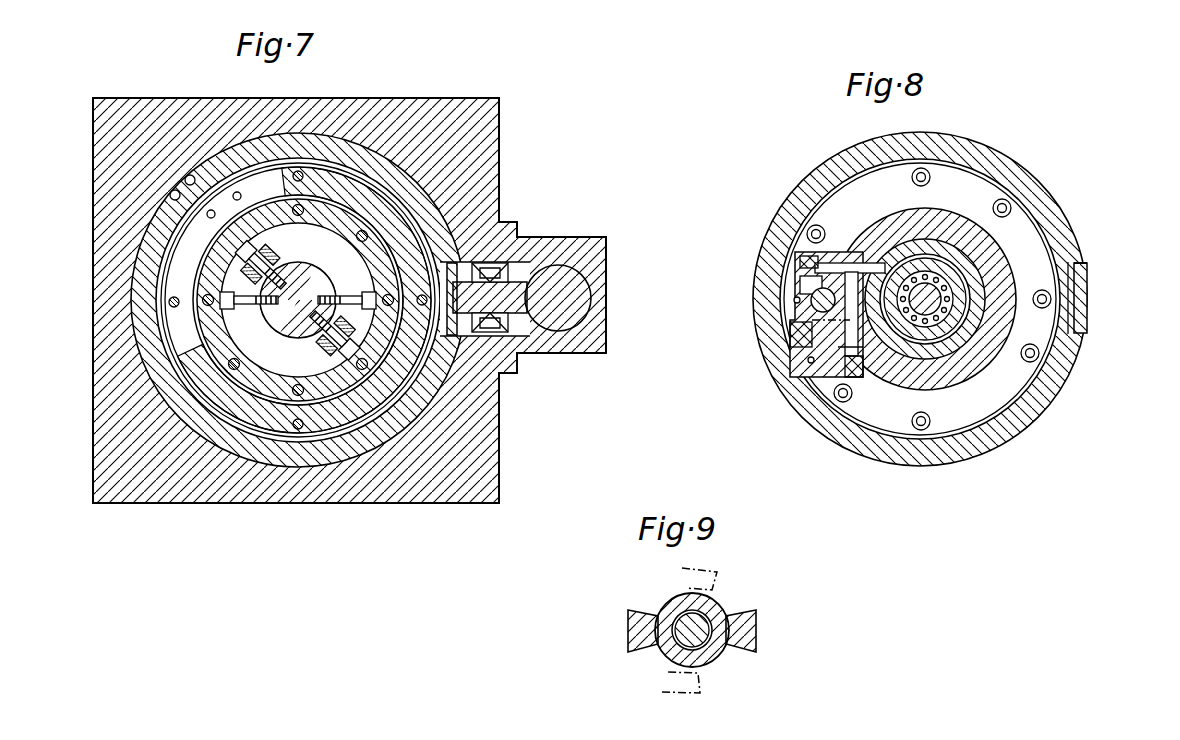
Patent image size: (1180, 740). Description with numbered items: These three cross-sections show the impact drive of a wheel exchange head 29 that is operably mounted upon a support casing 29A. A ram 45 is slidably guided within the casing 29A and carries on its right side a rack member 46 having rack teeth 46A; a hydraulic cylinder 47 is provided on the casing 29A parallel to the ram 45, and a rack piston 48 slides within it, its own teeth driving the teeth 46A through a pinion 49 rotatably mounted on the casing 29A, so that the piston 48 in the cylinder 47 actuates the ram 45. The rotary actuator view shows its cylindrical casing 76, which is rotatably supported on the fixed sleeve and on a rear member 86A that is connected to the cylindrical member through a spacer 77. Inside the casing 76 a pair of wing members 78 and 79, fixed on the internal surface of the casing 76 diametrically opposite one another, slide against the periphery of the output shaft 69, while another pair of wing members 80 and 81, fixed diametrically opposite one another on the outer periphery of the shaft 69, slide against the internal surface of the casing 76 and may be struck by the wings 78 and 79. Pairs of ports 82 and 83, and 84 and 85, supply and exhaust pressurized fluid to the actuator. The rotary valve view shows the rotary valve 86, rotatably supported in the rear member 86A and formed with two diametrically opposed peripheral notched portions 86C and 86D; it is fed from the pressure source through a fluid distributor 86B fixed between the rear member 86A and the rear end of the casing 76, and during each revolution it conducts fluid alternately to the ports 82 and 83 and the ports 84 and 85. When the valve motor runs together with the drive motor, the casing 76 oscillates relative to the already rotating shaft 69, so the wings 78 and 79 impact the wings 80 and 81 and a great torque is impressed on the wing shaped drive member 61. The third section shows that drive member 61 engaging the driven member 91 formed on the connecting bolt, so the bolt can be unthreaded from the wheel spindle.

In FIG. 7, the wheel exchange head 29 is at (429, 86).
In FIG. 7, the support casing 29A is at (462, 490).
In FIG. 7, the ram 45 is at (172, 442).
In FIG. 8, the ram 45 is at (1068, 366).
In FIG. 7, the rack member 46 is at (472, 336).
In FIG. 8, the rack member 46 is at (1087, 300).
In FIG. 8, the rack teeth 46A is at (1092, 272).
In FIG. 7, the hydraulic cylinder 47 is at (592, 354).
In FIG. 7, the rack piston 48 is at (588, 297).
In FIG. 7, the pinion 49 is at (512, 330).
In FIG. 9, the drive member 61 is at (720, 572).
In FIG. 7, the output shaft 69 is at (283, 340).
In FIG. 8, the output shaft 69 is at (950, 292).
In FIG. 7, the cylindrical casing 76 is at (252, 420).
In FIG. 7, the spacer 77 is at (312, 420).
In FIG. 7, the wing member 78 is at (230, 258).
In FIG. 7, the wing member 79 is at (338, 428).
In FIG. 7, the wing member 80 is at (190, 314).
In FIG. 7, the wing member 81 is at (420, 262).
In FIG. 7, the port 82 is at (210, 338).
In FIG. 7, the port 83 is at (350, 282).
In FIG. 7, the port 84 is at (218, 292).
In FIG. 7, the port 85 is at (388, 400).
In FIG. 8, the rotary valve 86 is at (797, 317).
In FIG. 8, the rear member 86A is at (982, 362).
In FIG. 8, the fluid distributor 86B is at (958, 400).
In FIG. 8, the notched portion 86C is at (805, 276).
In FIG. 8, the notched portion 86D is at (812, 352).
In FIG. 9, the driven member 91 is at (724, 654).